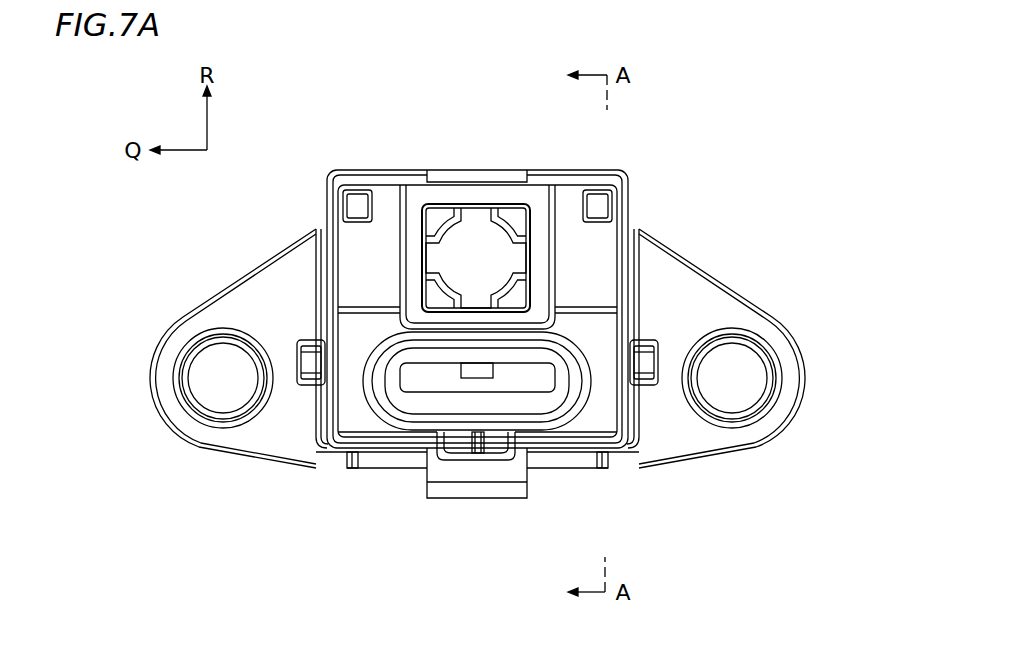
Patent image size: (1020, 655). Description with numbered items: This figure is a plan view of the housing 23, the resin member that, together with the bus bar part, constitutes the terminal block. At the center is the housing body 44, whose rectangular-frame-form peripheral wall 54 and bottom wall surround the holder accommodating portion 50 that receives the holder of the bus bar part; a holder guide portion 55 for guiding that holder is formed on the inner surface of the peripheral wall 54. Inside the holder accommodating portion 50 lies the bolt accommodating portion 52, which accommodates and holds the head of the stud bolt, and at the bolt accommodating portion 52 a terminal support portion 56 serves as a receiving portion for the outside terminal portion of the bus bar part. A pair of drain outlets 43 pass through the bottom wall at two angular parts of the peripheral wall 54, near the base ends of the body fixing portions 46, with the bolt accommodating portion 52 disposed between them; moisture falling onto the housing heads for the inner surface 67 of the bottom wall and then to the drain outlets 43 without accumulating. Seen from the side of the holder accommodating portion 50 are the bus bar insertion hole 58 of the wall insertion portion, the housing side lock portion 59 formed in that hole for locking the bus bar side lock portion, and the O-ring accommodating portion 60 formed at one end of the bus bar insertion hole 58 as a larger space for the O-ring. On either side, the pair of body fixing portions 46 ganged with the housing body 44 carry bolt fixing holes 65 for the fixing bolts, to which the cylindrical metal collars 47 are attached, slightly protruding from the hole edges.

The housing 23 is at (737, 182).
The drain outlets 43 is at (353, 212).
The housing body 44 is at (487, 168).
The body fixing portions 46 is at (248, 307).
The collars 47 is at (219, 430).
The holder accommodating portion 50 is at (368, 417).
The bolt accommodating portion 52 is at (472, 243).
The peripheral wall 54 is at (553, 180).
The holder guide portion 55 is at (345, 413).
The terminal support portion 56 is at (415, 273).
The bus bar insertion hole 58 is at (432, 380).
The housing side lock portion 59 is at (483, 375).
The O-ring accommodating portion 60 is at (533, 398).
The bolt fixing holes 65 is at (213, 378).
The inner surface 67 is at (585, 282).